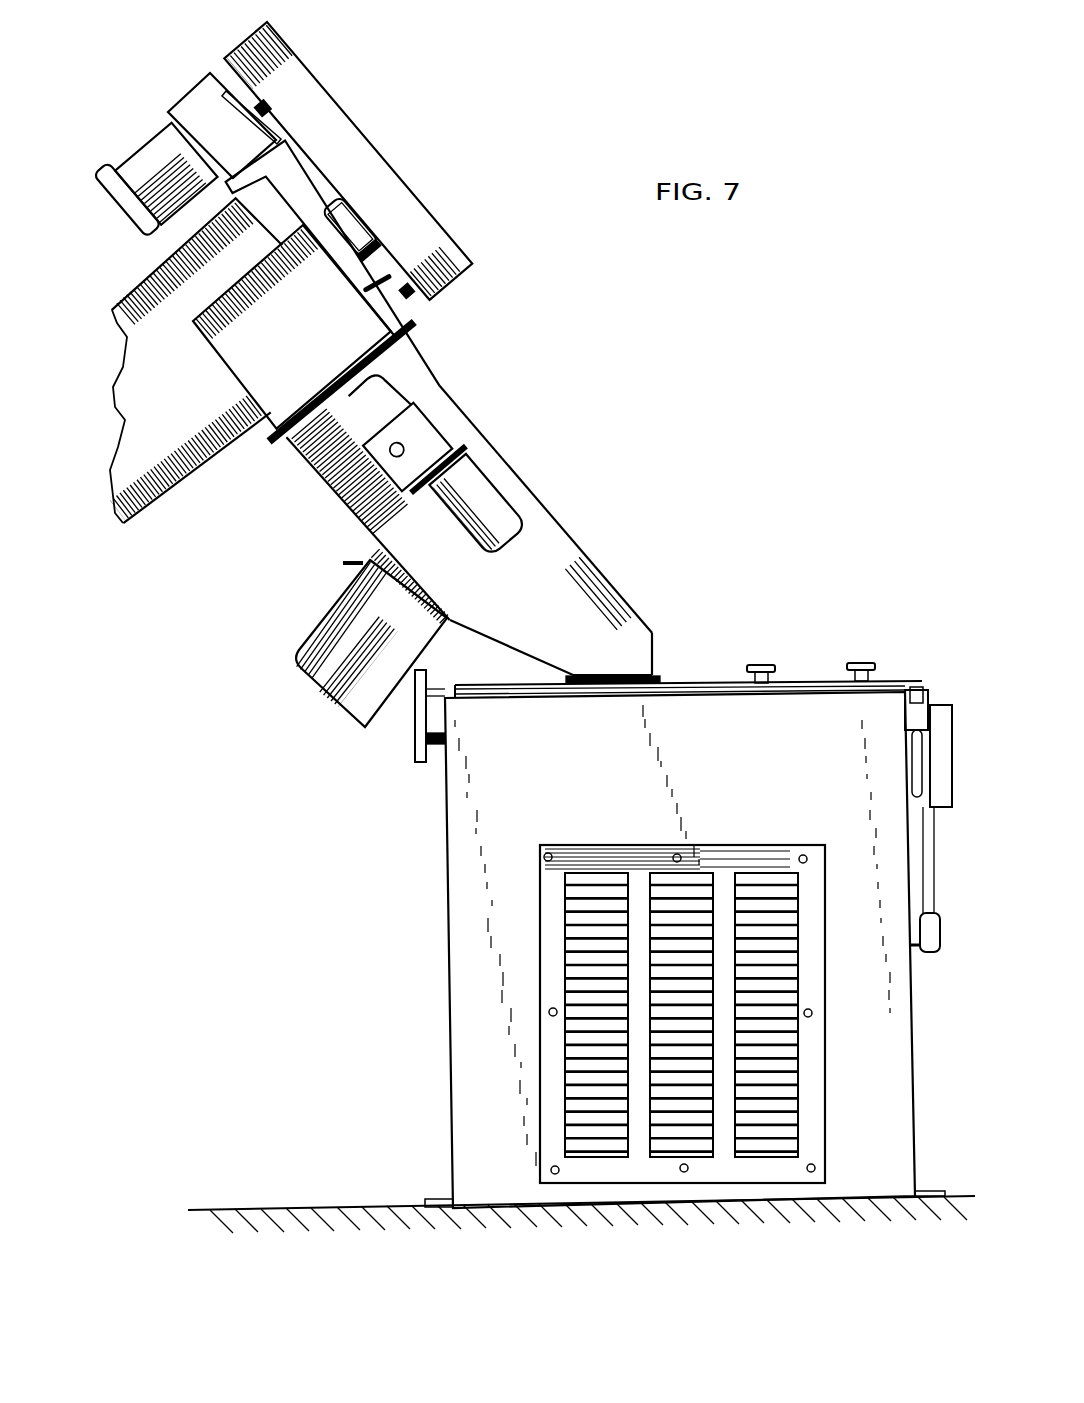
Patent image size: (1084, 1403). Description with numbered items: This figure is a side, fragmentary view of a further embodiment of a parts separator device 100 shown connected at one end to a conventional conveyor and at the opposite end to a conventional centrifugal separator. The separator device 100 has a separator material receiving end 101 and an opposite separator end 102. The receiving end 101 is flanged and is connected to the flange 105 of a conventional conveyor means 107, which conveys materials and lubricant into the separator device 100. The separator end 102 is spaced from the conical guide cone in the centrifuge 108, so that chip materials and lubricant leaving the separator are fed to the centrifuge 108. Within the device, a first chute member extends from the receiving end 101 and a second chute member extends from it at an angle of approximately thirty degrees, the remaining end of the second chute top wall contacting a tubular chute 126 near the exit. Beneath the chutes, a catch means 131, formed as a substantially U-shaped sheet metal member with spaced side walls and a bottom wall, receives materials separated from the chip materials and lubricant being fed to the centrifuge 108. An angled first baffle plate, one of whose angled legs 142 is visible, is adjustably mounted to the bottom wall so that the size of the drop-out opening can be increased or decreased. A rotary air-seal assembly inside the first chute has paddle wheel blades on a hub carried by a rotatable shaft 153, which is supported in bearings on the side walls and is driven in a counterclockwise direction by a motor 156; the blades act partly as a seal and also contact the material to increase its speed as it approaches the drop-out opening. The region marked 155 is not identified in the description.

The parts separator device 100 is at (570, 527).
The separator material receiving end 101 is at (413, 330).
The separator end 102 is at (643, 657).
The flange 105 is at (410, 316).
The conveyor means 107 is at (170, 477).
The centrifuge 108 is at (812, 708).
The tubular chute 126 is at (657, 643).
The catch means 131 is at (380, 713).
The angled leg 142 is at (343, 562).
The rotatable shaft 153 is at (462, 426).
The shaded support region 155 is at (322, 448).
The motor 156 is at (487, 503).